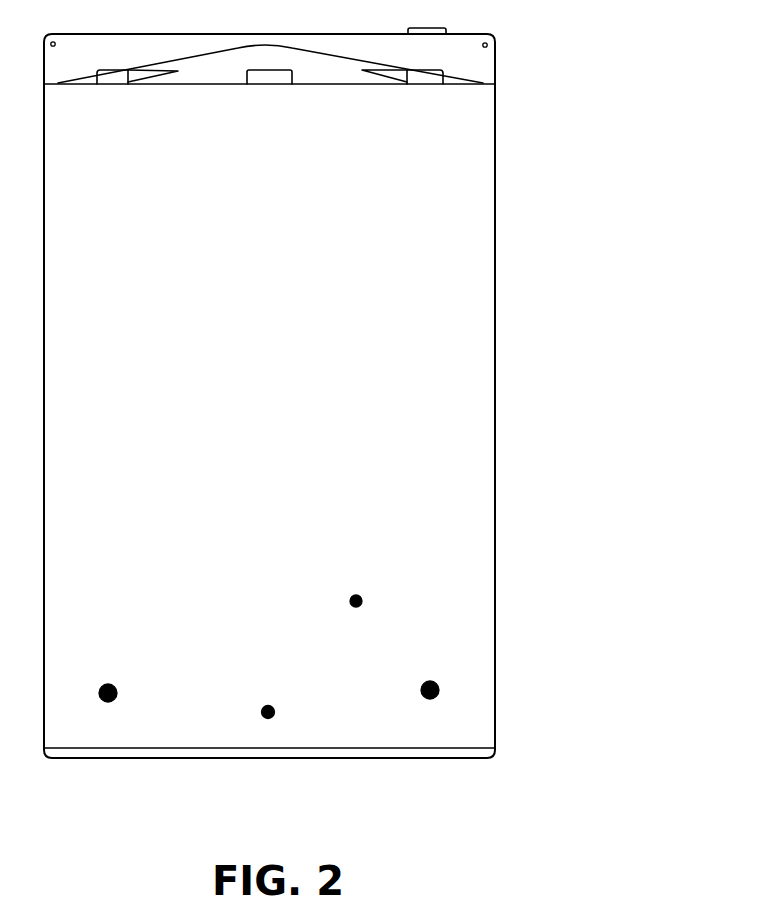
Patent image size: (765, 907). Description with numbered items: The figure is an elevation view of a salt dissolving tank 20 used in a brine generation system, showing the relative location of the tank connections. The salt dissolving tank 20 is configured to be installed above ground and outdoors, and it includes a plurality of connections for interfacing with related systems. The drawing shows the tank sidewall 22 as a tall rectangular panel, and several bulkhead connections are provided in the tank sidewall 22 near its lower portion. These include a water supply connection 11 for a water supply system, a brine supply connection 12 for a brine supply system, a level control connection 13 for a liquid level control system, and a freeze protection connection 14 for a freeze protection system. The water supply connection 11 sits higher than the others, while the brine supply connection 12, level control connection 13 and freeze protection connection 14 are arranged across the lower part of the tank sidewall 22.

The salt dissolving tank 20 is at (557, 148).
The tank sidewall 22 is at (452, 350).
The water supply connection 11 is at (360, 596).
The brine supply connection 12 is at (426, 682).
The level control connection 13 is at (113, 685).
The freeze protection connection 14 is at (274, 706).